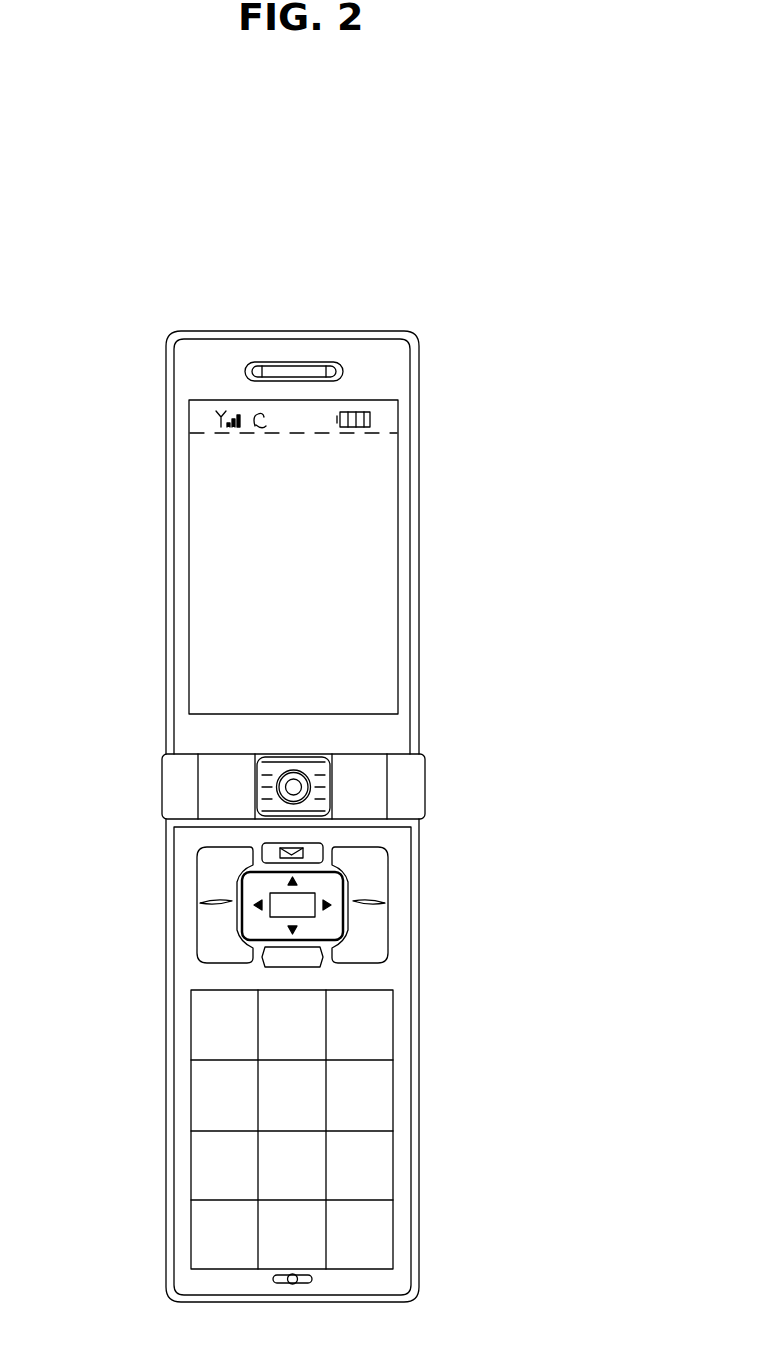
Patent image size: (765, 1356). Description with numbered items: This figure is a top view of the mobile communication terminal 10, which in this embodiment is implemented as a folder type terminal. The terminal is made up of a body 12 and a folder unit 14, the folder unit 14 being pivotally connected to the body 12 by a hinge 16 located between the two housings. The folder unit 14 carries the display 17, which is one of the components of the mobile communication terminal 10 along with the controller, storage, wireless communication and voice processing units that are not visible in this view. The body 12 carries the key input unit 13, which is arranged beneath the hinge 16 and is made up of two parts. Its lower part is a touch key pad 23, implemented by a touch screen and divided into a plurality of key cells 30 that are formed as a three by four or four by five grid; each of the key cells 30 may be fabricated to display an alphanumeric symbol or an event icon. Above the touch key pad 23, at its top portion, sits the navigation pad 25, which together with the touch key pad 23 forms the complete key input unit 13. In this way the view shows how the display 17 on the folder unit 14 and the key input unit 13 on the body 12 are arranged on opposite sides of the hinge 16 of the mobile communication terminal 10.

The mobile communication terminal 10 is at (512, 312).
The body 12 is at (421, 973).
The key input unit 13 is at (93, 995).
The folder unit 14 is at (422, 652).
The hinge 16 is at (428, 785).
The display 17 is at (189, 578).
The touch key pad 23 is at (190, 1147).
The navigation pad 25 is at (237, 932).
The key cells 30 is at (378, 1075).